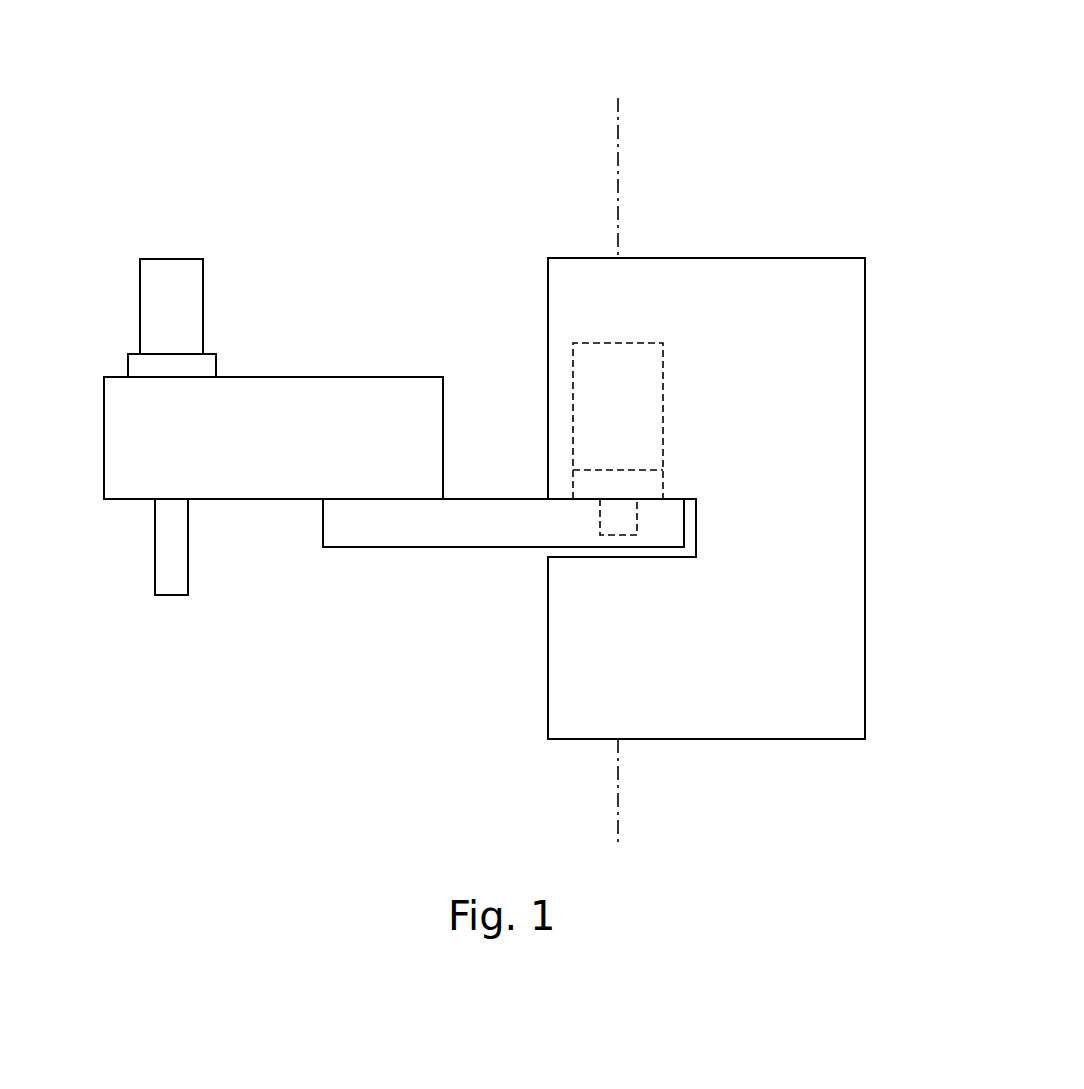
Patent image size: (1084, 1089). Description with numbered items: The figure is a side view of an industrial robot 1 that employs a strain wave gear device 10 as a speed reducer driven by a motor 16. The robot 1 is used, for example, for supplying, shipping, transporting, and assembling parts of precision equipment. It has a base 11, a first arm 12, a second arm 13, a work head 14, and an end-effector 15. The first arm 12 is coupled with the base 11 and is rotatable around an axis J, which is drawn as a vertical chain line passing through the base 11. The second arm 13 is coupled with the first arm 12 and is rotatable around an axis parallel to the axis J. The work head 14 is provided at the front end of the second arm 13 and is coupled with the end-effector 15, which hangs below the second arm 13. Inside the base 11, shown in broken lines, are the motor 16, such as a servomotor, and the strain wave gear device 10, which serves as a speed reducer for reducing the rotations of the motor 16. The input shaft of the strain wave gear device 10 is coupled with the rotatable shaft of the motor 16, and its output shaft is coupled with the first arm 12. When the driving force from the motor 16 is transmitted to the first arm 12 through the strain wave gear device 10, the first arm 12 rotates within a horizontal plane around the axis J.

The robot 1 is at (720, 114).
The axis J is at (616, 140).
The strain wave gear device 10 is at (664, 483).
The base 11 is at (865, 343).
The first arm 12 is at (430, 548).
The second arm 13 is at (344, 377).
The work head 14 is at (128, 368).
The end-effector 15 is at (155, 542).
The motor 16 is at (663, 392).